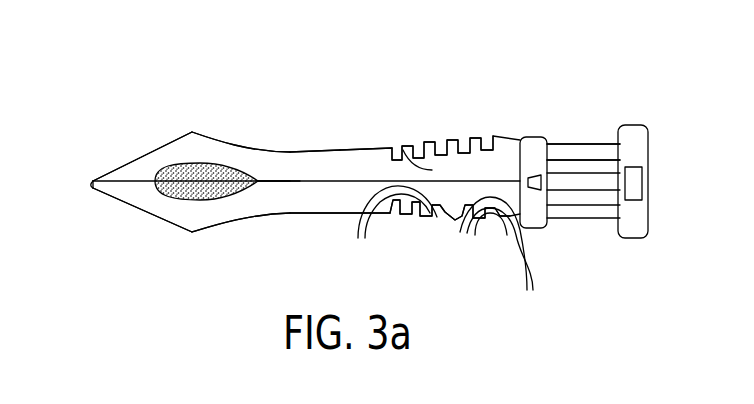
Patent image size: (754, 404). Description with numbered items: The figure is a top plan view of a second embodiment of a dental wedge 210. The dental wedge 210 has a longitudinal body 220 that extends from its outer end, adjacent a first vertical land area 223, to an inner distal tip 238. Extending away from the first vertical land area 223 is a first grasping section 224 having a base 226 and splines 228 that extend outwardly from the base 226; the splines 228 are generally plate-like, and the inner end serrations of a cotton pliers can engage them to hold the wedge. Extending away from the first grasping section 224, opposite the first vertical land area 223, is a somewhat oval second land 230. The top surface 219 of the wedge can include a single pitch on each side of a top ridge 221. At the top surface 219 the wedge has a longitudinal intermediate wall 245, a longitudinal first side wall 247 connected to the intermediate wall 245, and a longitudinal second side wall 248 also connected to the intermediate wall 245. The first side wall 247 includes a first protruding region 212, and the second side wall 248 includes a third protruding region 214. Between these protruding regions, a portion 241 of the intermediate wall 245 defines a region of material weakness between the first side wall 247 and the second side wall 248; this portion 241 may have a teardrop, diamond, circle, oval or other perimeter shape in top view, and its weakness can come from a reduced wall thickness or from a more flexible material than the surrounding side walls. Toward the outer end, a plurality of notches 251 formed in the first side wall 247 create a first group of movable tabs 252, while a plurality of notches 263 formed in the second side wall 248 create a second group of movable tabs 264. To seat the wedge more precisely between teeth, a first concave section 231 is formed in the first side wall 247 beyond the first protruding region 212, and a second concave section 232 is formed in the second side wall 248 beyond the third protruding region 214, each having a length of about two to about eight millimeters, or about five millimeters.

The dental wedge 210 is at (301, 111).
The first protruding region 212 is at (179, 113).
The third protruding region 214 is at (188, 239).
The top surface 219 is at (380, 175).
The longitudinal body 220 is at (237, 203).
The top ridge 221 is at (282, 183).
The first vertical land area 223 is at (533, 143).
The first grasping section 224 is at (599, 239).
The base 226 is at (602, 163).
The splines 228 is at (590, 152).
The second land 230 is at (632, 220).
The first concave section 231 is at (352, 150).
The second concave section 232 is at (335, 213).
The inner distal tip 238 is at (93, 189).
The portion of the intermediate wall 241 is at (157, 177).
The longitudinal intermediate wall 245 is at (311, 167).
The longitudinal first side wall 247 is at (222, 152).
The longitudinal second side wall 248 is at (285, 197).
The notches 251 is at (434, 140).
The first group of movable tabs 252 is at (436, 166).
The notches 263 is at (420, 214).
The second group of movable tabs 264 is at (446, 268).